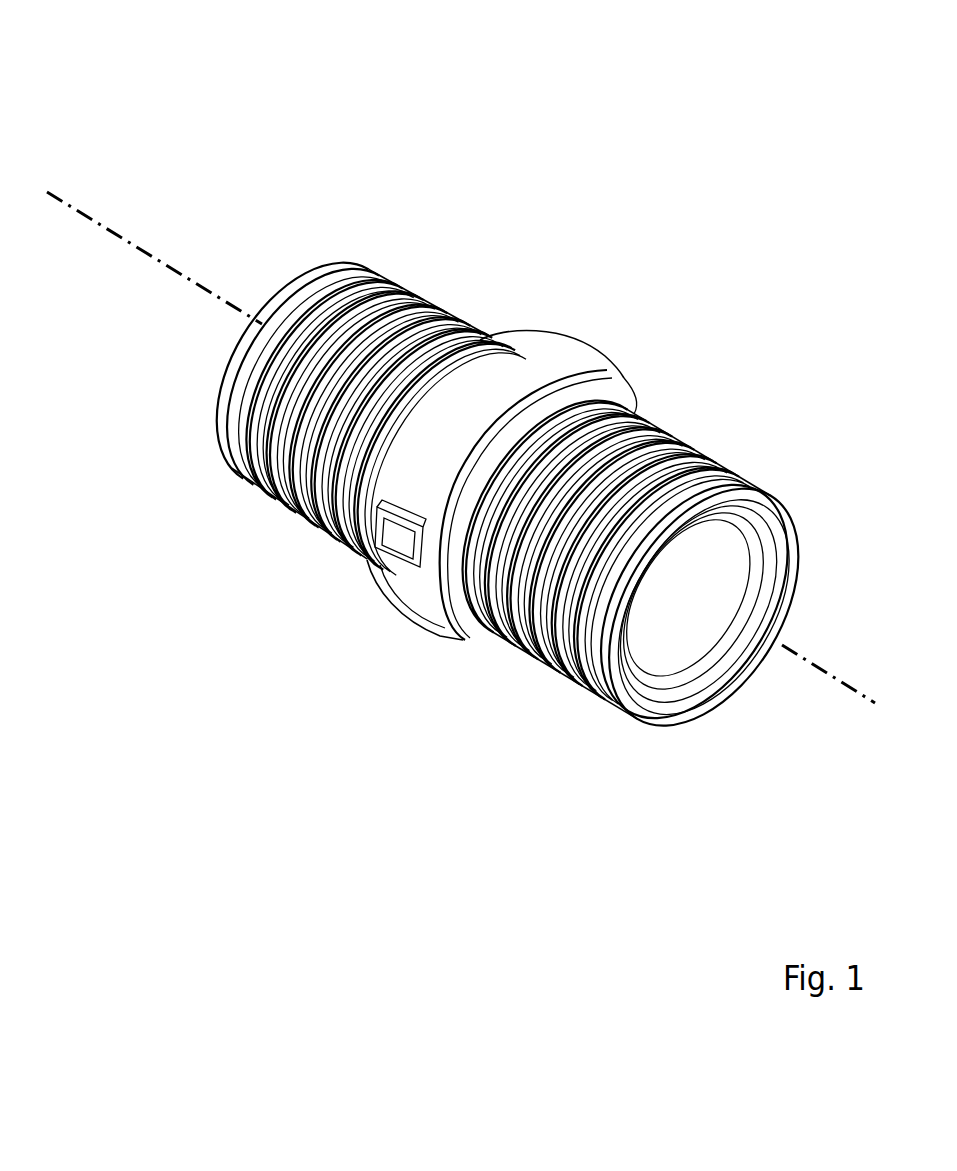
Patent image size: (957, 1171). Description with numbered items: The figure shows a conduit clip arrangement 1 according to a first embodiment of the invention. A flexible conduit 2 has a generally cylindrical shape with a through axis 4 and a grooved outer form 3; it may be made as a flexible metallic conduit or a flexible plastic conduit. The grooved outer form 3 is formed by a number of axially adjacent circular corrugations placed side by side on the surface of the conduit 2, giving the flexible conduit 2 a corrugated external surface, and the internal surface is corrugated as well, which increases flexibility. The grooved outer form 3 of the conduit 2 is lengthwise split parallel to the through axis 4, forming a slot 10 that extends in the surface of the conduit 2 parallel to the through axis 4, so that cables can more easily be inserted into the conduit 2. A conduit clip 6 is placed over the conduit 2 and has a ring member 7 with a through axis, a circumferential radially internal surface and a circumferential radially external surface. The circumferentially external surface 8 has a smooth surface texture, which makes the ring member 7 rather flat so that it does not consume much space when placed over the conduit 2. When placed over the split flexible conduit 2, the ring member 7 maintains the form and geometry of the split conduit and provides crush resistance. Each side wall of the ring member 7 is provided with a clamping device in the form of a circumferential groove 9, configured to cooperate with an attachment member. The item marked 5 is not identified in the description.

The conduit clip arrangement 1 is at (462, 411).
The flexible conduit 2 is at (347, 291).
The grooved outer form 3 is at (679, 437).
The through axis 4 is at (462, 447).
The housing dome 5 is at (537, 200).
The conduit clip 6 is at (576, 331).
The ring member 7 is at (463, 440).
The circumferentially external surface 8 is at (619, 273).
The circumferential groove 9 is at (525, 310).
The slot 10 is at (313, 267).